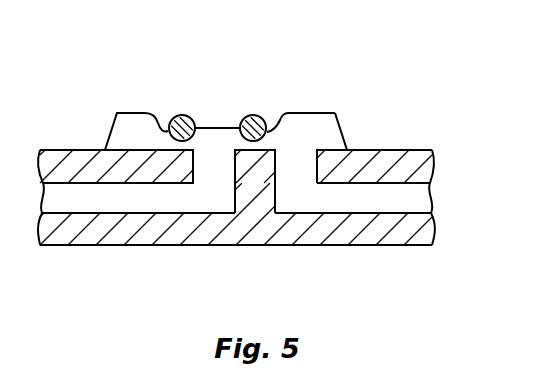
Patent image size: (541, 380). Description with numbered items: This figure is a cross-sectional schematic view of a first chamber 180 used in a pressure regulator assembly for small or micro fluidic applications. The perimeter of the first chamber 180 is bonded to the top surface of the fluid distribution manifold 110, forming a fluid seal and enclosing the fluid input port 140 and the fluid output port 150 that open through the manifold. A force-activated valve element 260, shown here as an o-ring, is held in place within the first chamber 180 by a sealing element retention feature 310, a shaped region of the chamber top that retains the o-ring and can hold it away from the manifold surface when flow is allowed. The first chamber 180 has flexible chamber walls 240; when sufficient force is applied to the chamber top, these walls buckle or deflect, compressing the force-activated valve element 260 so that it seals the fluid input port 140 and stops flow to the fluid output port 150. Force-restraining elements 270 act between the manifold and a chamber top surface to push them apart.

The fluid distribution manifold 110 is at (457, 143).
The fluid input port 140 is at (215, 182).
The fluid output port 150 is at (297, 182).
The first chamber 180 is at (343, 126).
The flexible chamber walls 240 is at (347, 145).
The force-activated valve element 260 is at (172, 122).
The force-restraining elements 270 is at (304, 113).
The sealing element retention feature 310 is at (285, 95).